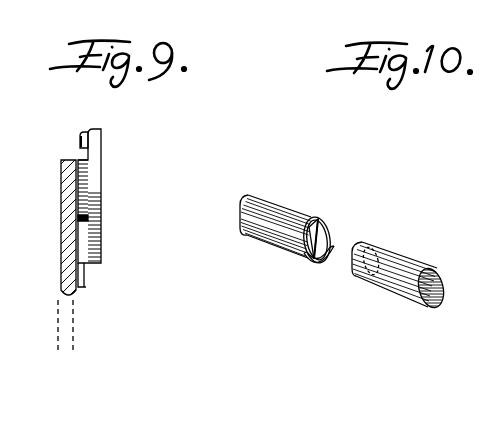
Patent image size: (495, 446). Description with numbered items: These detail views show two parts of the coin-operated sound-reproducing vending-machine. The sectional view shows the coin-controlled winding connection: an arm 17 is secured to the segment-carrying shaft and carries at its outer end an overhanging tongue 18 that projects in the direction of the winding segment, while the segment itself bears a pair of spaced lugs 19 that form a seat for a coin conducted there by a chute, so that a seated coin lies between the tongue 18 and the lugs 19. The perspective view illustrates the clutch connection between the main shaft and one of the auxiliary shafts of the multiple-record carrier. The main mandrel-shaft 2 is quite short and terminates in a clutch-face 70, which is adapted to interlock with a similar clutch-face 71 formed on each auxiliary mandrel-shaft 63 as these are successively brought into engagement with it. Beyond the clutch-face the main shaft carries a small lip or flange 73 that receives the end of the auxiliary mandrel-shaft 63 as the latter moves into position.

In FIG. 10, the mandrel-shaft 2 is at (285, 207).
In FIG. 10, the clutch-face 70 is at (331, 229).
In FIG. 10, the lip or flange 73 is at (306, 261).
In FIG. 10, the clutch-face 71 is at (350, 268).
In FIG. 10, the auxiliary mandrel-shaft 63 is at (386, 292).
In FIG. 9, the arm 17 is at (101, 216).
In FIG. 9, the overhanging tongue 18 is at (80, 142).
In FIG. 9, the spaced lugs 19 is at (88, 286).